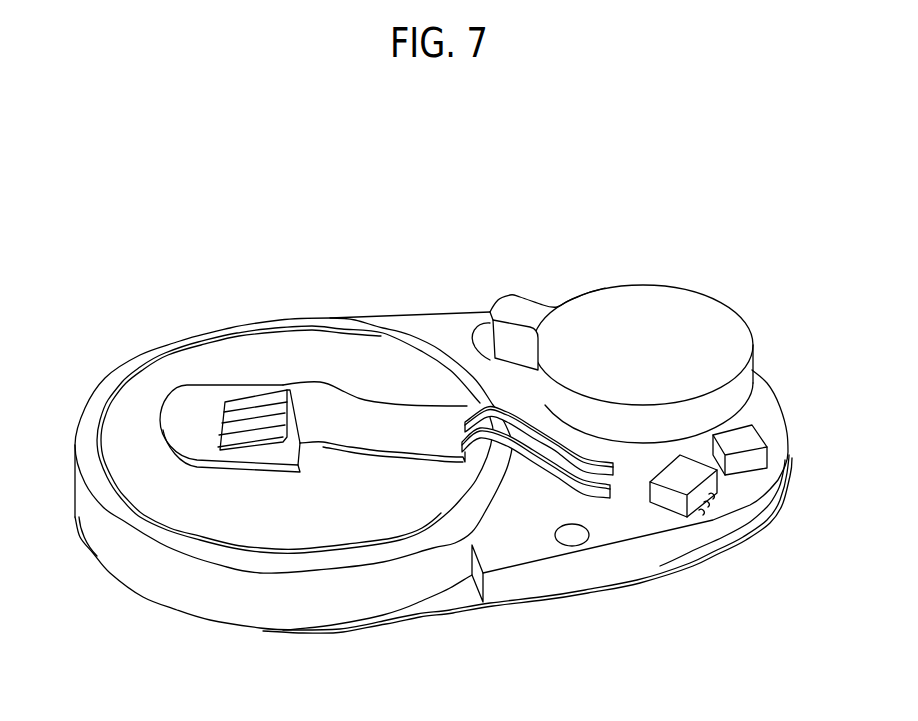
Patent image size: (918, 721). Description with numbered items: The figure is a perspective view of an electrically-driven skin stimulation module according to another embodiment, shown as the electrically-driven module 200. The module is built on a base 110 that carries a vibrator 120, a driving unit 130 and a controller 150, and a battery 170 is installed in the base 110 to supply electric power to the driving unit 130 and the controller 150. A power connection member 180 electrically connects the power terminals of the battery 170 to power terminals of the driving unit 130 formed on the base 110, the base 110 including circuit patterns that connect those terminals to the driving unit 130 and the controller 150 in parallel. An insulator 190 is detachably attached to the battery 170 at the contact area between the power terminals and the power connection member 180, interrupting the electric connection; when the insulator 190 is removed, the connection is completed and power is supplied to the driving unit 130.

The electrically-driven module 200 is at (93, 169).
The base 110 is at (453, 600).
The vibrator 120 is at (633, 303).
The driving unit 130 is at (745, 460).
The controller 150 is at (667, 502).
The battery 170 is at (243, 532).
The power connection member 180 is at (347, 413).
The insulator 190 is at (193, 407).